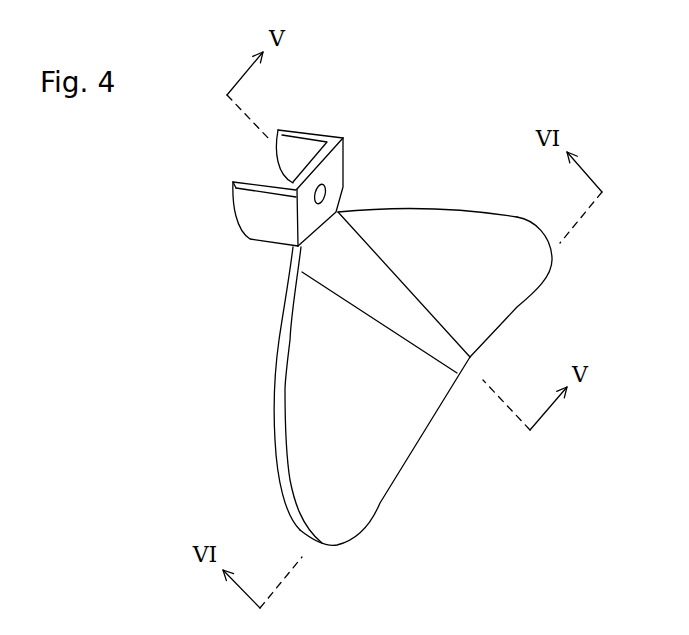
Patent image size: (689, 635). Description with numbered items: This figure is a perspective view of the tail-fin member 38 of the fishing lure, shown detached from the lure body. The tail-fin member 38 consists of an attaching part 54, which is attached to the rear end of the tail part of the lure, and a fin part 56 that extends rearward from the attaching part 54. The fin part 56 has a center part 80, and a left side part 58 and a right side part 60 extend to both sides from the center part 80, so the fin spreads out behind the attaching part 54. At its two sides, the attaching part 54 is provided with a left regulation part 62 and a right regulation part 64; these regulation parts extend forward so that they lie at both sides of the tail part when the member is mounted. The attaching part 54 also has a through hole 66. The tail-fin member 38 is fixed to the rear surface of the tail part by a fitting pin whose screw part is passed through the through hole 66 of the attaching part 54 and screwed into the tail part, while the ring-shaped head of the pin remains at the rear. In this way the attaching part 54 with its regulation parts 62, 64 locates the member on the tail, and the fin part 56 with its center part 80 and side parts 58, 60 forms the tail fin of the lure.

The tail-fin member 38 is at (415, 353).
The attaching part 54 is at (293, 163).
The fin part 56 is at (465, 377).
The left side part 58 is at (380, 463).
The right side part 60 is at (478, 240).
The left regulation part 62 is at (252, 212).
The right regulation part 64 is at (300, 155).
The through hole 66 is at (336, 187).
The center part 80 is at (353, 273).